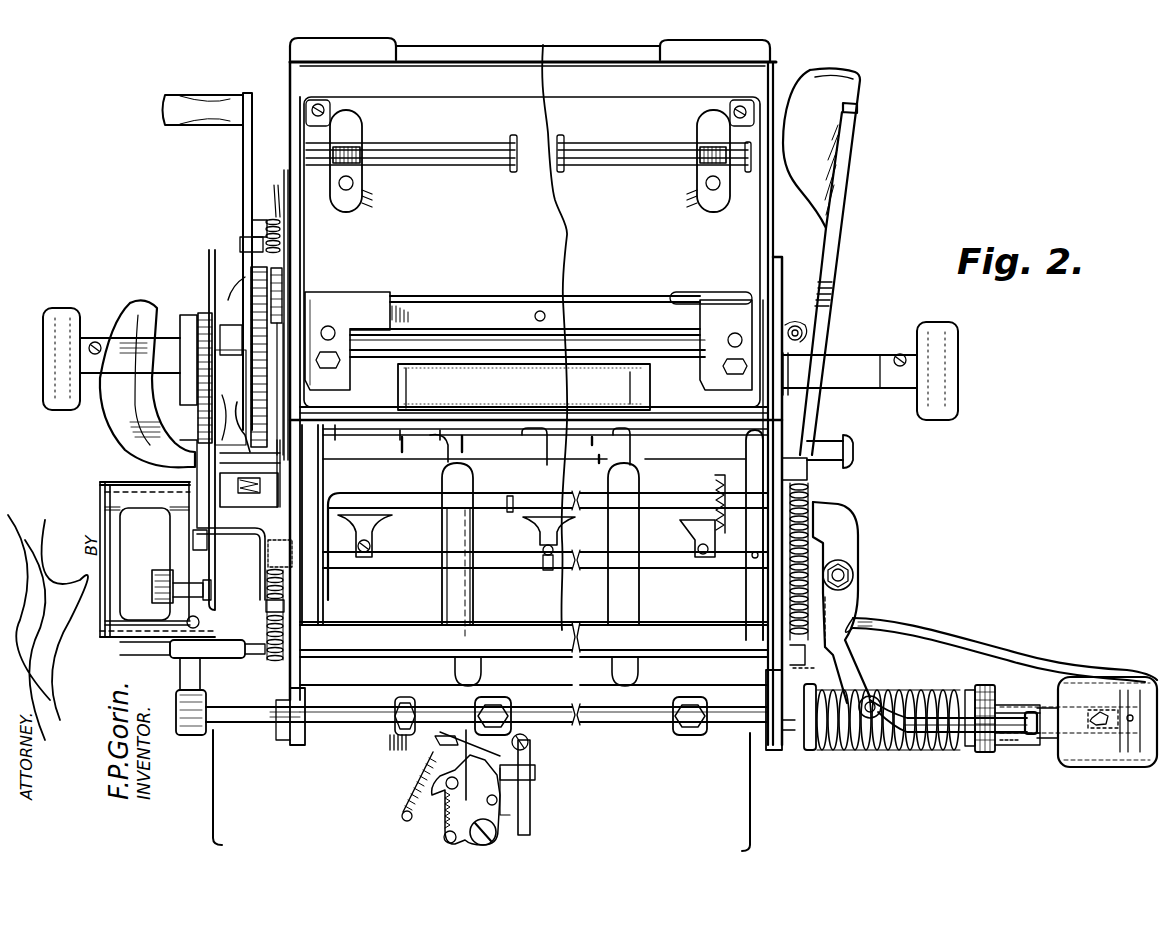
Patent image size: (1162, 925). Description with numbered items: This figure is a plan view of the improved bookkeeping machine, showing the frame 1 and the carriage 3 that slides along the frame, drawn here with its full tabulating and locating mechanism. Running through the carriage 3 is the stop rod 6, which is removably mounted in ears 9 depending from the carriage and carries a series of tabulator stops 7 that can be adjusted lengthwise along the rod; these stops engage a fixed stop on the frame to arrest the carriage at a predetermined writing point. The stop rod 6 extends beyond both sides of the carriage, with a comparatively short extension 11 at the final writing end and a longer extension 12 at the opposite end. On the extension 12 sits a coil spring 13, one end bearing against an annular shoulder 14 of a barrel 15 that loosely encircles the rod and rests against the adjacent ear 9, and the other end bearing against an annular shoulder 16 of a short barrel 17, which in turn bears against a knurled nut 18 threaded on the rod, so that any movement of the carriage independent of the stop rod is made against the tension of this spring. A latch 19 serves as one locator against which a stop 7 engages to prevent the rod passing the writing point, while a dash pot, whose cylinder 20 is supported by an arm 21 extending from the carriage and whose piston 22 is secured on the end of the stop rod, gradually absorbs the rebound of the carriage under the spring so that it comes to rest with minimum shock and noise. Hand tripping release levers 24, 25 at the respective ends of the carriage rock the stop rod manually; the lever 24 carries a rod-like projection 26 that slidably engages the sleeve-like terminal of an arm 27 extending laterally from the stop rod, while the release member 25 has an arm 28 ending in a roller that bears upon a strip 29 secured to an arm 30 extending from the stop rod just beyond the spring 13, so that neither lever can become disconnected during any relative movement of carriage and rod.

The frame 1 is at (304, 600).
The carriage 3 is at (533, 391).
The stop rod 6 is at (352, 730).
The tabulator stops 7 is at (398, 738).
The ears 9 is at (296, 703).
The short extension 11 is at (260, 726).
The long extension 12 is at (930, 712).
The coil spring 13 is at (936, 748).
The annular shoulder 14 is at (808, 752).
The barrel 15 is at (832, 752).
The annular shoulder 16 is at (982, 710).
The short barrel 17 is at (968, 748).
The knurled nut 18 is at (998, 705).
The latch 19 is at (490, 742).
The cylinder 20 is at (1100, 700).
The arm 21 is at (1082, 664).
The piston 22 is at (1115, 740).
The hand tripping release lever 24 is at (185, 460).
The hand tripping release lever 25 is at (830, 303).
The rod-like projection 26 is at (125, 655).
The arm 27 is at (198, 684).
The arm 28 is at (857, 680).
The strip 29 is at (905, 745).
The arm 30 is at (1028, 740).